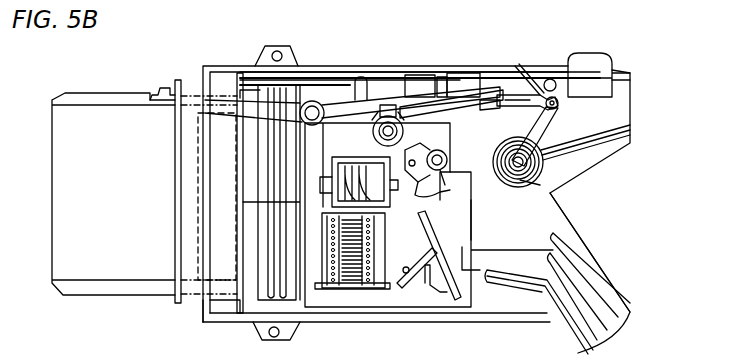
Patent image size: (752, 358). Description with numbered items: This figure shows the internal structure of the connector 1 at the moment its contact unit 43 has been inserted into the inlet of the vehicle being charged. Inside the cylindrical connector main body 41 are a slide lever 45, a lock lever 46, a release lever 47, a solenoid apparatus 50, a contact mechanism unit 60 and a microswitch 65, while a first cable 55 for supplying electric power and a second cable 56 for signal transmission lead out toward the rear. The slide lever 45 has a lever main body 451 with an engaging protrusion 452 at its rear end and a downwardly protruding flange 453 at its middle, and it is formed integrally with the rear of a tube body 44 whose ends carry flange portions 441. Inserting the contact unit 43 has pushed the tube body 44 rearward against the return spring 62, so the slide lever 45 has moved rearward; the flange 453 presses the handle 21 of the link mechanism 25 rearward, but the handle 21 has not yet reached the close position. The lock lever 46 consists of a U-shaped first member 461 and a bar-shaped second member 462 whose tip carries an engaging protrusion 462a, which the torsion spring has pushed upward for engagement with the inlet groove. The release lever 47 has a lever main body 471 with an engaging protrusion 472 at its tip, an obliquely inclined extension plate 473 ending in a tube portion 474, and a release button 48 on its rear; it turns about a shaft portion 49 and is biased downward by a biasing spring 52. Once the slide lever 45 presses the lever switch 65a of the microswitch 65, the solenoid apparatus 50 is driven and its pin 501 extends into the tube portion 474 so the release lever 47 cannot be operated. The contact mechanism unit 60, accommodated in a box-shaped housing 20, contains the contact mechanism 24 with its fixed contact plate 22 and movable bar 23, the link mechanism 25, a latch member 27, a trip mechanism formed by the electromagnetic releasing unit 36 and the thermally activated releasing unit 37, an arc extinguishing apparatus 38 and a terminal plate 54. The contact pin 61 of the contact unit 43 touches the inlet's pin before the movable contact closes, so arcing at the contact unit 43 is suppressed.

The connector 1 is at (368, 62).
The housing 20 is at (473, 218).
The handle 21 is at (400, 108).
The fixed contact plate 22 is at (407, 272).
The movable bar 23 is at (432, 220).
The contact mechanism 24 is at (432, 284).
The link mechanism 25 is at (452, 180).
The latch member 27 is at (450, 192).
The electromagnetic releasing unit 36 is at (343, 205).
The thermally activated releasing unit 37 is at (455, 292).
The arc extinguishing apparatus 38 is at (383, 289).
The connector main body 41 is at (422, 70).
The contact unit 43 is at (75, 250).
The tube body 44 is at (202, 288).
The slide lever 45 is at (297, 70).
The lock lever 46 is at (347, 112).
The release lever 47 is at (535, 98).
The release button 48 is at (603, 55).
The shaft portion 49 is at (553, 98).
The solenoid apparatus 50 is at (543, 164).
The biasing spring 52 is at (525, 68).
The terminal plate 54 is at (317, 209).
The first cable 55 is at (596, 315).
The second cable 56 is at (578, 278).
The contact mechanism unit 60 is at (367, 297).
The contact pin 61 is at (265, 203).
The return spring 62 is at (277, 88).
The microswitch 65 is at (465, 72).
The lever switch 65a is at (445, 77).
The flange portions 441 is at (175, 301).
The lever main body 451 is at (310, 76).
The engaging protrusion 452 is at (490, 100).
The flange 453 is at (363, 90).
The first member 461 is at (389, 112).
The second member 462 is at (253, 110).
The engaging protrusion 462a is at (160, 87).
The lever main body 471 is at (530, 98).
The engaging protrusion 472 is at (523, 98).
The extension plate 473 is at (545, 123).
The tube portion 474 is at (560, 153).
The pin 501 is at (547, 170).